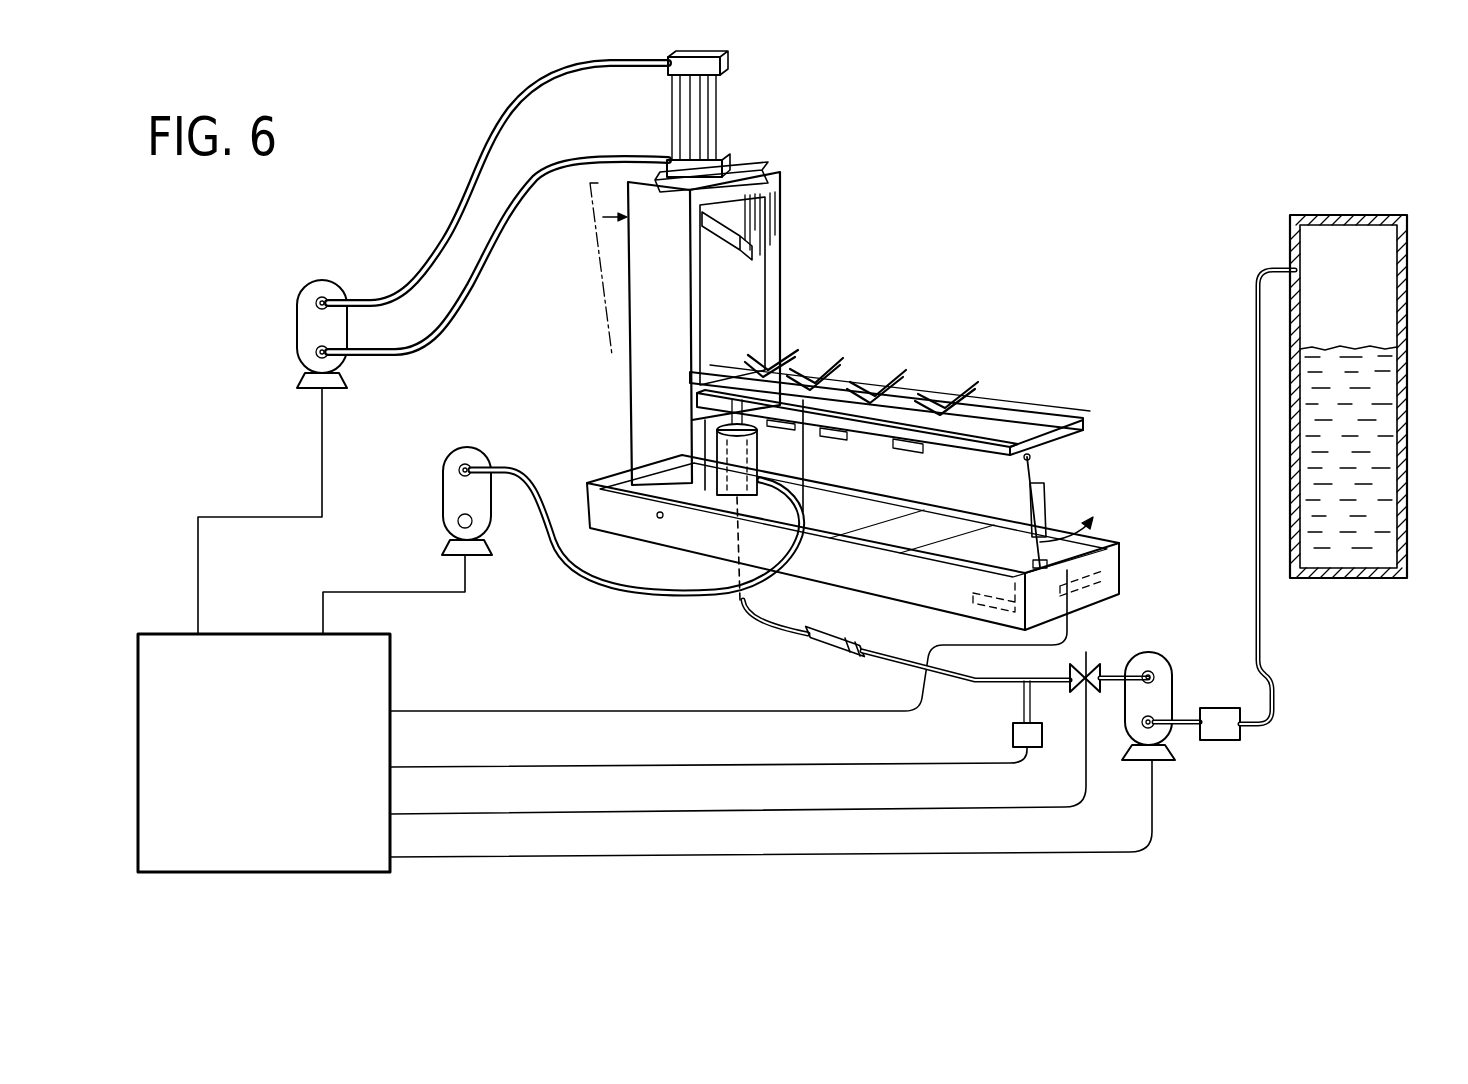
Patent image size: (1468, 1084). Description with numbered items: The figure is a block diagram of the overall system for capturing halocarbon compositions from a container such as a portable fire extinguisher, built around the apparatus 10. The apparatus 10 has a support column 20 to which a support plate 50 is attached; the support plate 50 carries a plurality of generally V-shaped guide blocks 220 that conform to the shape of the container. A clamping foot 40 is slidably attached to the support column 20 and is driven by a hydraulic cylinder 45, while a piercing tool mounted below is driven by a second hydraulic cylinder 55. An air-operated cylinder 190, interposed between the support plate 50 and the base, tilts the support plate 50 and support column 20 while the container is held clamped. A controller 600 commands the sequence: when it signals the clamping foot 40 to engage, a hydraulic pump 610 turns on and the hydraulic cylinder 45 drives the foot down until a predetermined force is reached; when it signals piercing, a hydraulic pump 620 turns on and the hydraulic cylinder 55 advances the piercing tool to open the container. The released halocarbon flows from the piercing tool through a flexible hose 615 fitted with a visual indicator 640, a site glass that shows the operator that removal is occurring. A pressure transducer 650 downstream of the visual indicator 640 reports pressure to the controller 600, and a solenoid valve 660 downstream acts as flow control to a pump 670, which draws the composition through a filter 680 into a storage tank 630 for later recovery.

The apparatus 10 is at (928, 206).
The support column 20 is at (598, 336).
The clamping foot 40 is at (712, 232).
The hydraulic cylinder 45 is at (722, 113).
The support plate 50 is at (1067, 413).
The hydraulic cylinder 55 is at (762, 456).
The pneumatic cylinder 190 is at (1043, 508).
The guide blocks 220 is at (977, 400).
The controller 600 is at (373, 863).
The hydraulic pump 610 is at (320, 280).
The flexible hose 615 is at (757, 625).
The hydraulic pump 620 is at (450, 447).
The storage tank 630 is at (1407, 327).
The visual indicator 640 is at (847, 655).
The pressure transducer 650 is at (1012, 745).
The solenoid valve 660 is at (1090, 665).
The pump 670 is at (1173, 680).
The filter 680 is at (1223, 738).